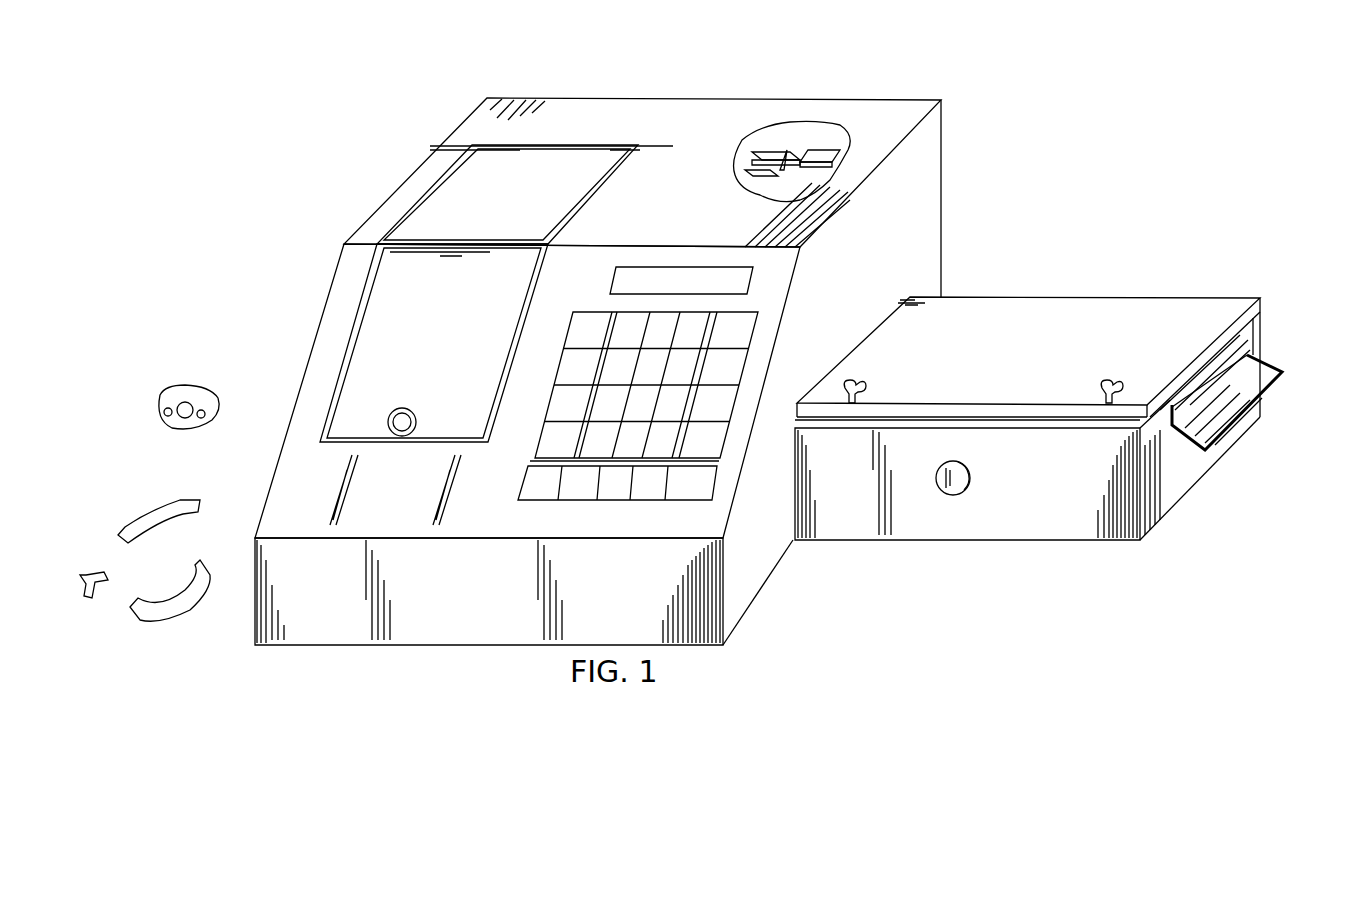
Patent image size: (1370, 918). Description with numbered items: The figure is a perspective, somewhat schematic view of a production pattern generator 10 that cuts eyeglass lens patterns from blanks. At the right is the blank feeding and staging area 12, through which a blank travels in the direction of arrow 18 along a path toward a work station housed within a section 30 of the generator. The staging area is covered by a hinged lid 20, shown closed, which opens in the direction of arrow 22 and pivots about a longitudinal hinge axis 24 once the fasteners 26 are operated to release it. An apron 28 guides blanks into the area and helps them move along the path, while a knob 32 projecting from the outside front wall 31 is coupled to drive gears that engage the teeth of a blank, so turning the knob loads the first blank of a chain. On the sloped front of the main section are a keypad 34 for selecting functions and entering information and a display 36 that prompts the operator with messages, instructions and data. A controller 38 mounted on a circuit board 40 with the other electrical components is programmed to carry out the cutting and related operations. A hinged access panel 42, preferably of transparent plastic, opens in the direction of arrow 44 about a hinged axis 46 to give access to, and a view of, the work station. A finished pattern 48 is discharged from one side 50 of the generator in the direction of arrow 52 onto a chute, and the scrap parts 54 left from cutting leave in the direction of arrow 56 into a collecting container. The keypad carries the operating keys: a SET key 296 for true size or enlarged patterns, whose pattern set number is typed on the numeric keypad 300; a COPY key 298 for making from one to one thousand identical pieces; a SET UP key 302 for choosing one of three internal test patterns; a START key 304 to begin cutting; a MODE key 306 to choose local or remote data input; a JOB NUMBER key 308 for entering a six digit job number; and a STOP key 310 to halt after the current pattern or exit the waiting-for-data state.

The production pattern generator 10 is at (1036, 124).
The blank feeding and staging area 12 is at (1238, 348).
The arrow 18 is at (1212, 384).
The hinged lid 20 is at (1197, 307).
The arrow 22 is at (988, 343).
The longitudinal hinge axis 24 is at (1258, 313).
The fasteners 26 is at (854, 384).
The apron 28 is at (1257, 368).
The section 30 is at (664, 88).
The outside front wall 31 is at (1035, 489).
The knob 32 is at (962, 470).
The keypad 34 is at (562, 334).
The display 36 is at (616, 284).
The microprocessor or controller 38 is at (778, 155).
The circuit board 40 is at (832, 150).
The hinged access panel 42 is at (459, 345).
The arrow 44 is at (403, 250).
The hinged axis 46 is at (648, 147).
The pattern 48 is at (165, 386).
The side 50 is at (296, 380).
The arrow 52 is at (230, 415).
The scrap parts 54 is at (158, 512).
The arrow 56 is at (250, 492).
The SET key 296 is at (576, 500).
The COPY key 298 is at (617, 500).
The numeric keypad 300 is at (740, 303).
The SET UP key 302 is at (752, 328).
The START key 304 is at (537, 500).
The MODE key 306 is at (724, 436).
The JOB NUMBER key 308 is at (745, 367).
The STOP key 310 is at (694, 500).